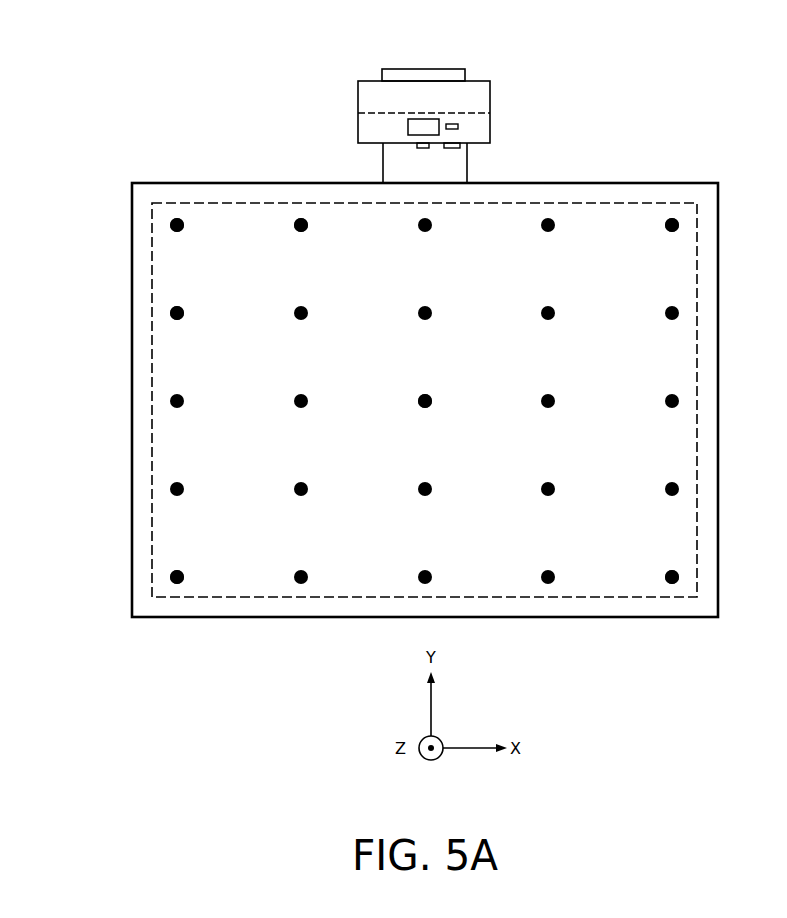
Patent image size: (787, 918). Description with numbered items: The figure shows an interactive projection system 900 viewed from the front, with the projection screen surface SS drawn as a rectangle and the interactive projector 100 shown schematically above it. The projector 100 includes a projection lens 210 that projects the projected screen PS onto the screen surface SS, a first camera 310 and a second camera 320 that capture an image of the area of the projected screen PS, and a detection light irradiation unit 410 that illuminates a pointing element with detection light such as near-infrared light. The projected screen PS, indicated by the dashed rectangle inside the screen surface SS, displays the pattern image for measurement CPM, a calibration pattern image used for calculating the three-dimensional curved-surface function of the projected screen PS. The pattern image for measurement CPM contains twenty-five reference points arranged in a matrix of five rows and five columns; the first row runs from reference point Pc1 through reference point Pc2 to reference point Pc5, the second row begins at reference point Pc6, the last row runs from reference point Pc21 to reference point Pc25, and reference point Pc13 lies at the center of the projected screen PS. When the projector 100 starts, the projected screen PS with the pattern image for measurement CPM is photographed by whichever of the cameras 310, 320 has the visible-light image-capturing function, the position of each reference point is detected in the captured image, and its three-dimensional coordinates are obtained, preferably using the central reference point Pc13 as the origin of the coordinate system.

The interactive projector 100 is at (492, 94).
The projection lens 210 is at (408, 127).
The first camera 310 is at (458, 127).
The second camera 320 is at (462, 148).
The detection light irradiation unit 410 is at (417, 147).
The interactive projection system 900 is at (615, 97).
The projection screen surface SS is at (185, 188).
The projected screen PS is at (253, 202).
The pattern image for measurement CPM is at (701, 398).
The reference point Pc1 is at (180, 232).
The reference point Pc2 is at (304, 232).
The reference point Pc5 is at (673, 232).
The reference point Pc6 is at (181, 320).
The reference point Pc13 is at (427, 407).
The reference point Pc21 is at (180, 573).
The reference point Pc25 is at (669, 572).